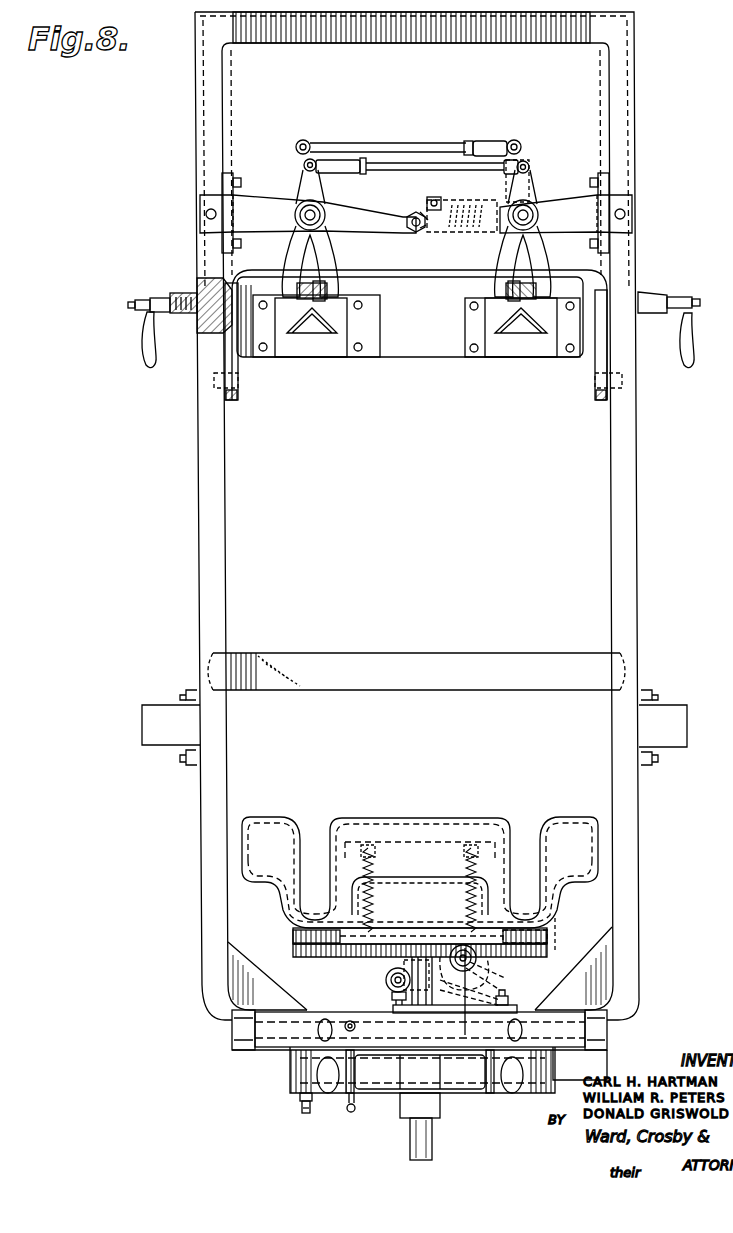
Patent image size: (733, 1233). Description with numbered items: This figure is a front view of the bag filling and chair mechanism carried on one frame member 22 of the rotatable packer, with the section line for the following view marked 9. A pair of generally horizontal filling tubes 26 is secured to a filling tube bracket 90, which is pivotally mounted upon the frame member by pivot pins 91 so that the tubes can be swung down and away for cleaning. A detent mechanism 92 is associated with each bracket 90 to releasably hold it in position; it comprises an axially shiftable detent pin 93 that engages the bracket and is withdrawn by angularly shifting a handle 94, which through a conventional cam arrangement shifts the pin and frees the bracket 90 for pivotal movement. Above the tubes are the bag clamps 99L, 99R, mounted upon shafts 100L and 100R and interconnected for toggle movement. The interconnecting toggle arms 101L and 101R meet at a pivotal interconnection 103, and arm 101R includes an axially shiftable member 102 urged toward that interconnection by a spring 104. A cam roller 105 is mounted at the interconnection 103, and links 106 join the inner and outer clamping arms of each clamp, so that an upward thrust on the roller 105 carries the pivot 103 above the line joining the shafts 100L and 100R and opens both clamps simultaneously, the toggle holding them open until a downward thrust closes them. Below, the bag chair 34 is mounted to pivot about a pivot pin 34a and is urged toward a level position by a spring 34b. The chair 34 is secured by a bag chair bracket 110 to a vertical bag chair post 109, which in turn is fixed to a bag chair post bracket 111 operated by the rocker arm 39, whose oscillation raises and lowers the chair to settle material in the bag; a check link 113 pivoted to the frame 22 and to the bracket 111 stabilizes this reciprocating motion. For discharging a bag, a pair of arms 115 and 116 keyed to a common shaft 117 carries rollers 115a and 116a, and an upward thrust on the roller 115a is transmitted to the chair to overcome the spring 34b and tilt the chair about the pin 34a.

The frame member 22 is at (200, 527).
The filling tubes 26 is at (306, 320).
The bag chair 34 is at (414, 817).
The pivot pin 34a is at (387, 943).
The spring 34b is at (467, 890).
The rocker arm 39 is at (332, 1103).
The filling tube bracket 90 is at (421, 349).
The pivot pins 91 is at (241, 380).
The detent mechanism 92 is at (172, 279).
The detent pin 93 is at (200, 322).
The handle 94 is at (150, 337).
The bag clamp 99L is at (355, 254).
The bag clamp 99R is at (504, 263).
The shaft 100L is at (323, 210).
The shaft 100R is at (511, 210).
The toggle arm 101L is at (389, 229).
The toggle arm 101R is at (418, 232).
The axially shiftable member 102 is at (446, 216).
The pivotal interconnection 103 is at (410, 216).
The spring 104 is at (480, 229).
The cam roller 105 is at (415, 238).
The links 106 is at (397, 153).
The bag chair post 109 is at (410, 1148).
The bag chair bracket 110 is at (405, 959).
The bag chair post bracket 111 is at (364, 1104).
The check link 113 is at (325, 1012).
The arm 115 is at (478, 958).
The roller 115a is at (482, 983).
The arm 116 is at (390, 996).
The roller 116a is at (386, 985).
The shaft 117 is at (522, 947).
The section line 9- 9 is at (559, 930).